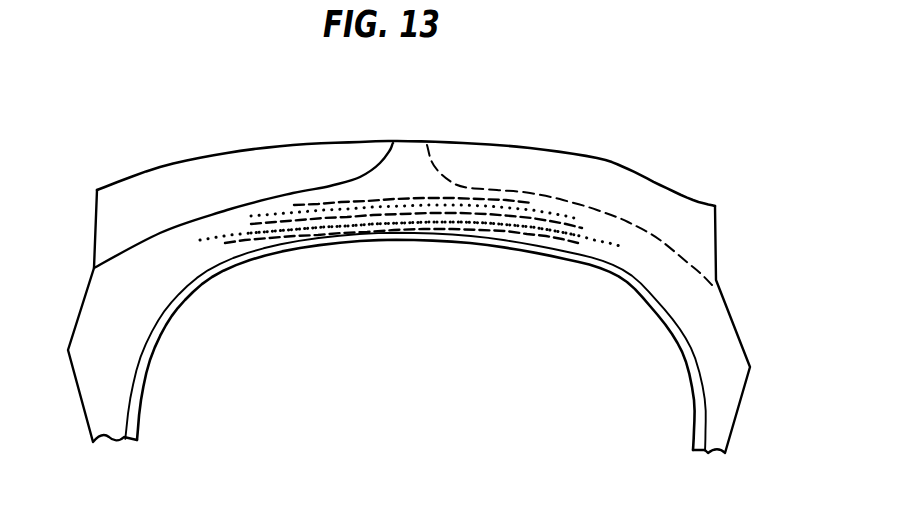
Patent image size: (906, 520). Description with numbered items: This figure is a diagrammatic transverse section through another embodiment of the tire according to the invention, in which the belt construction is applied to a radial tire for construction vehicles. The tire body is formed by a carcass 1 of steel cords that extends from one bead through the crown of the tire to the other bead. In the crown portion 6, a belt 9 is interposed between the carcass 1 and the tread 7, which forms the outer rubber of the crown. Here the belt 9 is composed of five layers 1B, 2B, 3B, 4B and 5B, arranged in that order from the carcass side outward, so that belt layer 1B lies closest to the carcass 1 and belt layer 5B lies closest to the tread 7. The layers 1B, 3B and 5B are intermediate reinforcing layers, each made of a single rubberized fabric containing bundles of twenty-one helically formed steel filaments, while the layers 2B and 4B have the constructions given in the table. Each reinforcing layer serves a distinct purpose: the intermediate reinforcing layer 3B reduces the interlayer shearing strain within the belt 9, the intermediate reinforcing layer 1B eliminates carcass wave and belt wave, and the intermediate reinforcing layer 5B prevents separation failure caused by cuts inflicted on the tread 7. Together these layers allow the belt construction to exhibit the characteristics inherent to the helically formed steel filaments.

The carcass 1 is at (680, 345).
The crown portion 6 is at (417, 143).
The tread 7 is at (548, 170).
The belt 9 is at (185, 261).
The belt layer 1B is at (337, 228).
The belt layer 2B is at (355, 220).
The belt layer 3B is at (385, 217).
The belt layer 4B is at (425, 207).
The belt layer 5B is at (473, 205).